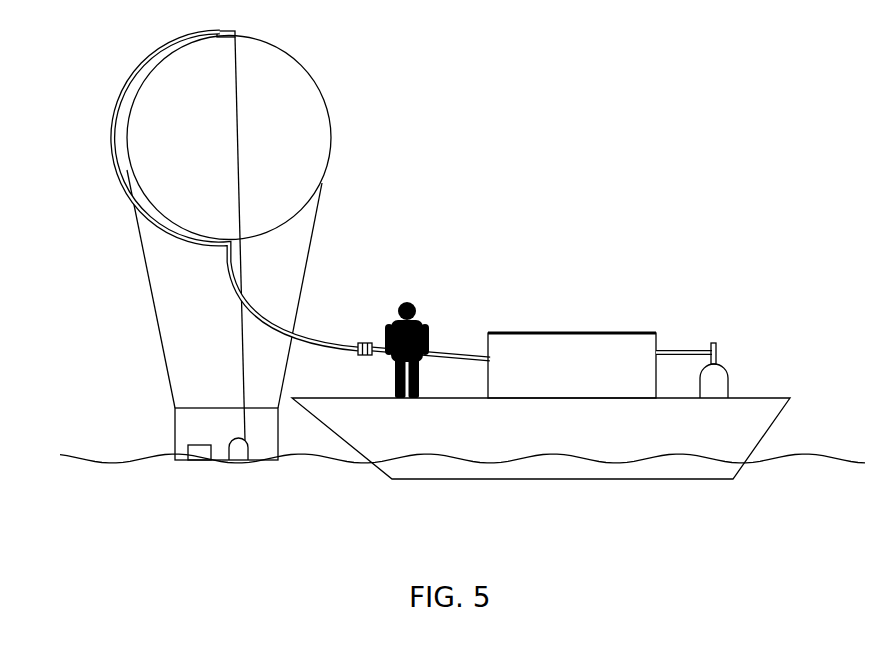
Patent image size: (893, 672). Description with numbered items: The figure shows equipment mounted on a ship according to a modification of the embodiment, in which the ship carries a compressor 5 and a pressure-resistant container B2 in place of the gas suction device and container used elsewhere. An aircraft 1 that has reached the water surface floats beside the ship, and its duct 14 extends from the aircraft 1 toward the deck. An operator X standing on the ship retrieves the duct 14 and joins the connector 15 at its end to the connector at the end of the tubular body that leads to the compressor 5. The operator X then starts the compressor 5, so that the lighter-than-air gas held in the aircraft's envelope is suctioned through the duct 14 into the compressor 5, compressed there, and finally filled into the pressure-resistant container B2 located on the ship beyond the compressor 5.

The aircraft 1 is at (368, 86).
The duct 14 is at (322, 343).
The connector 15 is at (360, 343).
The operator X is at (425, 333).
The compressor 5 is at (553, 333).
The pressure-resistant container B2 is at (728, 380).